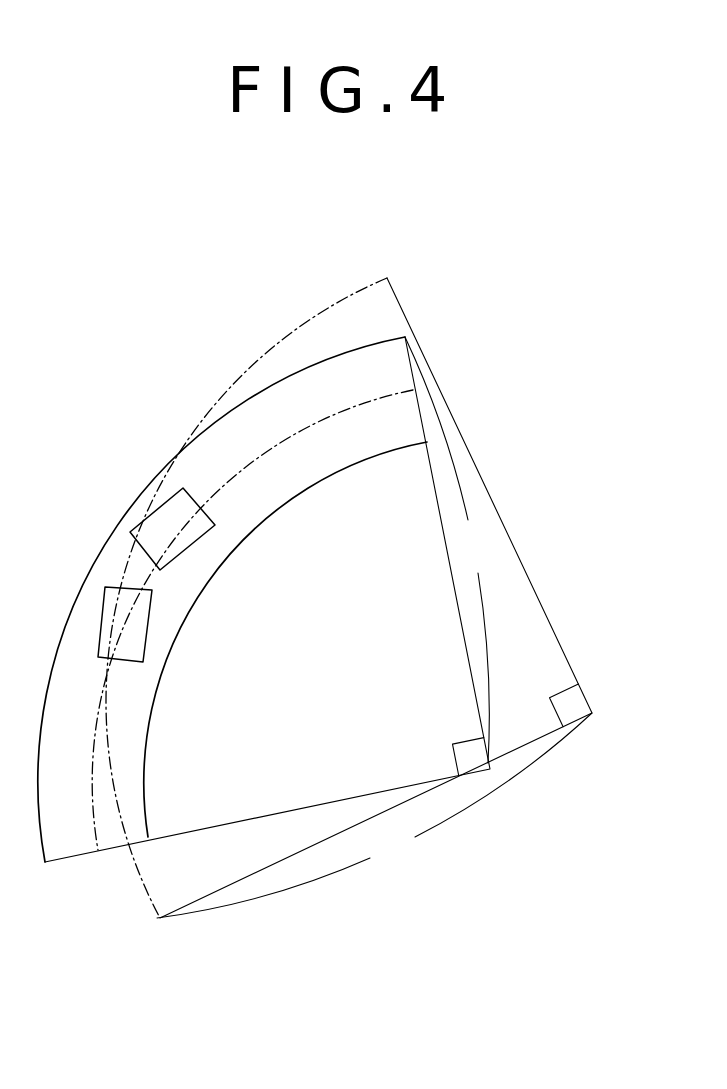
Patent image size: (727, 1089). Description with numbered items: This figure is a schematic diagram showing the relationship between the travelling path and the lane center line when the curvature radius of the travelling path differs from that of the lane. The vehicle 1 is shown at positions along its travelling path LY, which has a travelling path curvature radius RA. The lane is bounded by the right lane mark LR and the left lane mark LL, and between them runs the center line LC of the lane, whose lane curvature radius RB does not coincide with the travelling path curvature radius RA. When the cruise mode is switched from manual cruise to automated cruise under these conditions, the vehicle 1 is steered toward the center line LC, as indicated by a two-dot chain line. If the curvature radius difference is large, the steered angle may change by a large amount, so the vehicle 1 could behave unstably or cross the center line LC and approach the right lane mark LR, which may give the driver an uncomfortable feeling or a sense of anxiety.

The vehicle 1 is at (140, 523).
The travelling path LY is at (293, 333).
The right lane mark LR is at (404, 337).
The center line LC is at (397, 388).
The left lane mark LL is at (405, 458).
The travelling path curvature radius RA is at (374, 815).
The lane curvature radius RB is at (451, 550).